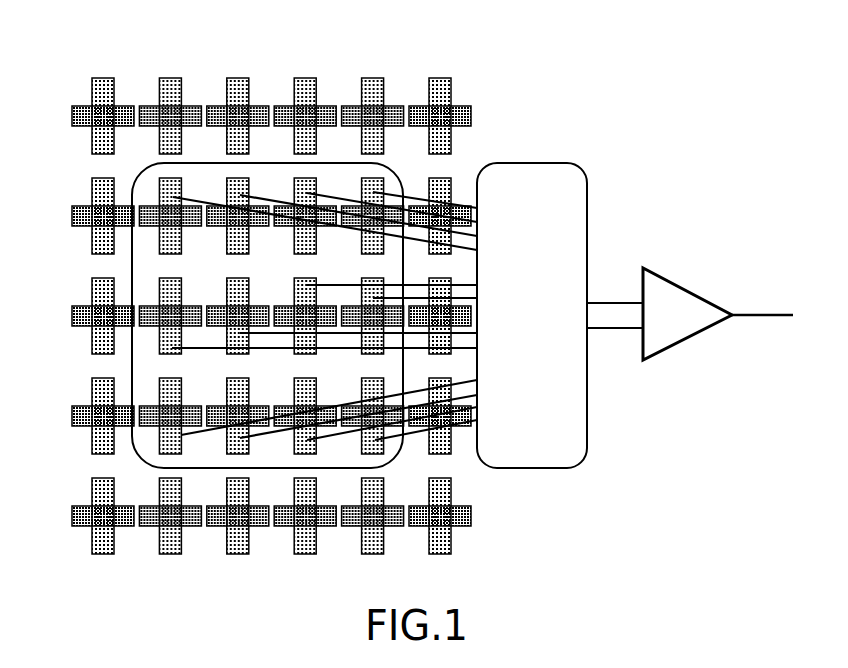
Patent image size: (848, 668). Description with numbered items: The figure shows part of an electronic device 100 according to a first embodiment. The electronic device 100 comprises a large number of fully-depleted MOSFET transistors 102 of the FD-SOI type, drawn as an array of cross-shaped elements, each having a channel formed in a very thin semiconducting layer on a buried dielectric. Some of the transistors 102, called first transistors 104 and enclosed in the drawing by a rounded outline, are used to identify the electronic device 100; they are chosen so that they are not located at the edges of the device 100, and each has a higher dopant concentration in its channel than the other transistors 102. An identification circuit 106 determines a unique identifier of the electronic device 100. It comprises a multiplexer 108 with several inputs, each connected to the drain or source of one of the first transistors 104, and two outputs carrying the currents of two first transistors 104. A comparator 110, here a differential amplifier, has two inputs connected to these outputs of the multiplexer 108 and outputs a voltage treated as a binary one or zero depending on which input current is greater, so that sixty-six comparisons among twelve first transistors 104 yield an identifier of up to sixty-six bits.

The electronic device 100 is at (748, 72).
The fully-depleted MOSFET transistors 102 is at (400, 70).
The first transistors 104 is at (167, 187).
The identification circuit 106 is at (700, 208).
The multiplexer 108 is at (542, 170).
The comparator 110 is at (690, 308).